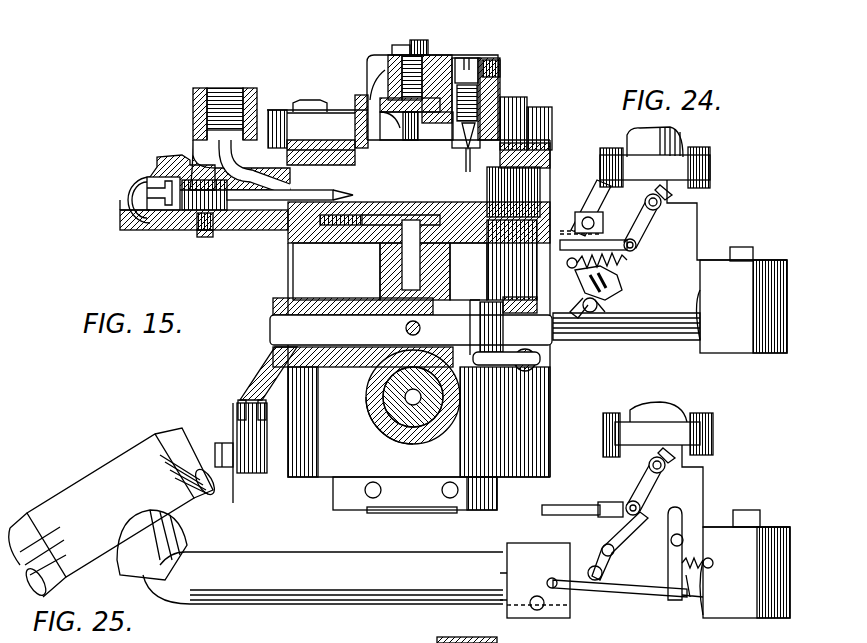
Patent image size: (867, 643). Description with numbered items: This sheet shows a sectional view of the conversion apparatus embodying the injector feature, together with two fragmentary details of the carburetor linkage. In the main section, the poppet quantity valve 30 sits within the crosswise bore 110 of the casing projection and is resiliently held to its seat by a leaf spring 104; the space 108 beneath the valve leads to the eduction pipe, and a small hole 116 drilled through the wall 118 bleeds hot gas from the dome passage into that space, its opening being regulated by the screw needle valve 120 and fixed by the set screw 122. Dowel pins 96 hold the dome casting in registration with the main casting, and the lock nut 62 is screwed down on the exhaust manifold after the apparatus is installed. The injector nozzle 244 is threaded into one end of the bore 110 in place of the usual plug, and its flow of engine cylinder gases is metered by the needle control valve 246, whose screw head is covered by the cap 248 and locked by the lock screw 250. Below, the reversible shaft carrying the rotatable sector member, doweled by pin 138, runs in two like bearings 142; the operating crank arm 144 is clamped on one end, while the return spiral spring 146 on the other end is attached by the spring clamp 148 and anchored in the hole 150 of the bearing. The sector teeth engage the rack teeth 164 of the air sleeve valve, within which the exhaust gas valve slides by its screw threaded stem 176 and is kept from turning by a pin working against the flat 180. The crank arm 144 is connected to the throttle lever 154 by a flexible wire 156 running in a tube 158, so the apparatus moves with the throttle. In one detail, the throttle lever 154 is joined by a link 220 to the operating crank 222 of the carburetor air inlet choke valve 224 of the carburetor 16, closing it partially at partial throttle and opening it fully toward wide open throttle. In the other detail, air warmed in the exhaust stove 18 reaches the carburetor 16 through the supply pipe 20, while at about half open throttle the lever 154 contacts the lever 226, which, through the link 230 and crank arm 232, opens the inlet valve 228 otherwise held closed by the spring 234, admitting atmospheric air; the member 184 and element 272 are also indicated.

In FIG. 24, the carburetor 16 is at (760, 352).
In FIG. 25, the carburetor 16 is at (748, 580).
In FIG. 25, the exhaust stove 18 is at (122, 460).
In FIG. 25, the supply pipe 20 is at (370, 575).
In FIG. 15, the poppet quantity valve 30 is at (378, 100).
In FIG. 15, the lock nut 62 is at (500, 488).
In FIG. 15, the dowel pins 96 is at (308, 108).
In FIG. 15, the leaf spring 104 is at (392, 50).
In FIG. 15, the space beneath the valve 108 is at (412, 40).
In FIG. 15, the cross-wise bore 110 is at (357, 248).
In FIG. 15, the hole 116 is at (468, 175).
In FIG. 15, the wall 118 is at (530, 150).
In FIG. 15, the screw needle valve 120 is at (478, 58).
In FIG. 15, the set screw 122 is at (500, 70).
In FIG. 15, the dowel pin 138 is at (406, 328).
In FIG. 15, the bearings 142 is at (365, 281).
In FIG. 15, the operating crank arm 144 is at (500, 100).
In FIG. 15, the return spiral spring 146 is at (540, 350).
In FIG. 15, the spring clamp 148 is at (537, 363).
In FIG. 15, the hole 150 is at (520, 376).
In FIG. 24, the throttle lever 154 is at (650, 218).
In FIG. 25, the throttle lever 154 is at (643, 487).
In FIG. 15, the flexible wire 156 is at (248, 497).
In FIG. 24, the flexible wire 156 is at (597, 230).
In FIG. 24, the tube 158 is at (621, 260).
In FIG. 15, the rack teeth 164 is at (375, 380).
In FIG. 15, the screw threaded stem 176 is at (380, 400).
In FIG. 15, the flat 180 is at (390, 418).
In FIG. 15, the rim 184 is at (418, 432).
In FIG. 24, the link 220 is at (615, 256).
In FIG. 24, the operating crank 222 is at (612, 281).
In FIG. 24, the carburetor air inlet choke valve 224 is at (600, 299).
In FIG. 25, the lever 226 is at (683, 523).
In FIG. 25, the inlet valve 228 is at (567, 612).
In FIG. 25, the link 230 is at (645, 600).
In FIG. 25, the crank arm 232 is at (560, 531).
In FIG. 25, the spring 234 is at (700, 597).
In FIG. 15, the injector nozzle 244 is at (317, 130).
In FIG. 15, the needle control valve 246 is at (222, 228).
In FIG. 15, the cap 248 is at (165, 175).
In FIG. 15, the lock screw 250 is at (205, 240).
In FIG. 25, the bracket 272 is at (359, 636).